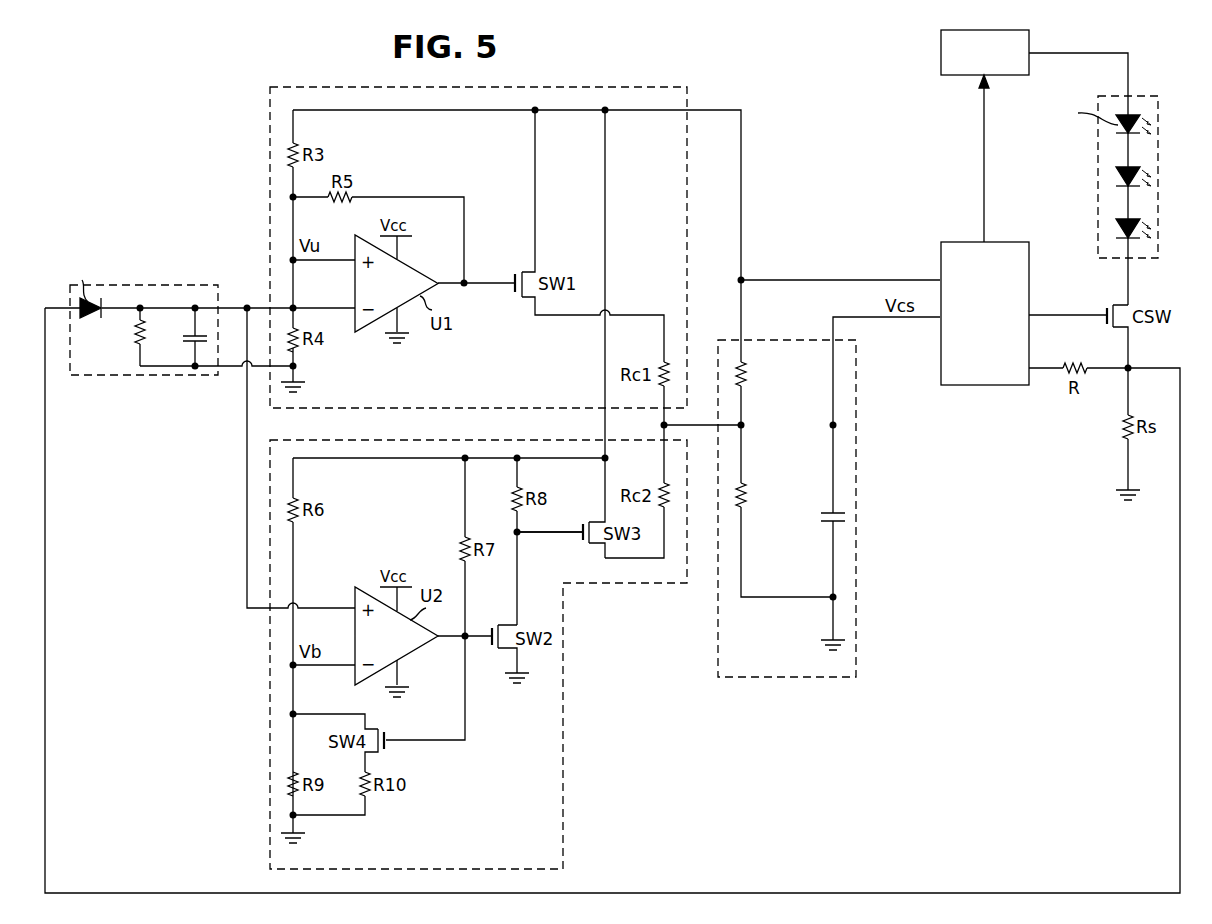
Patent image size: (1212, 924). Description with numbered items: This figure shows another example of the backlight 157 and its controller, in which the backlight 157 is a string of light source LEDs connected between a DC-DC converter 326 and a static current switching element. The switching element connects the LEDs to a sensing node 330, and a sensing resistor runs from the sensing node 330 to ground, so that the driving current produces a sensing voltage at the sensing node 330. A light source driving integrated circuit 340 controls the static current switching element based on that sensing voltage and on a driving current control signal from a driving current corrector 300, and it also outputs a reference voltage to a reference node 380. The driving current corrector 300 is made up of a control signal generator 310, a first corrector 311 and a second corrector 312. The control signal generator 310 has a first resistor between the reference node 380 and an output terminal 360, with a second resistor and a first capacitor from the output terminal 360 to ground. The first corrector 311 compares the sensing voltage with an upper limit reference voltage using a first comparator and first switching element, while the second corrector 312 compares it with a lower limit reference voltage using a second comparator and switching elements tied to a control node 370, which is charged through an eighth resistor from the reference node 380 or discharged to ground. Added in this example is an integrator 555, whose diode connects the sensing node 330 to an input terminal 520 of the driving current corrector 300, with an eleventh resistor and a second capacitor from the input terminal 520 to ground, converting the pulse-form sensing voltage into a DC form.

The integrator 555 is at (142, 285).
The input terminal of the driving current corrector 520 is at (247, 306).
The first corrector 311 is at (648, 87).
The second corrector 312 is at (610, 583).
The control signal generator 310 is at (788, 677).
The driving current corrector 300 is at (701, 447).
The reference node 380 is at (744, 278).
The output terminal of the control signal generator 360 is at (831, 429).
The control node 370 is at (519, 536).
The light source driving integrated circuit 340 is at (984, 386).
The DC-DC converter 326 is at (941, 46).
The backlight 157 is at (1098, 180).
The sensing node 330 is at (1132, 372).